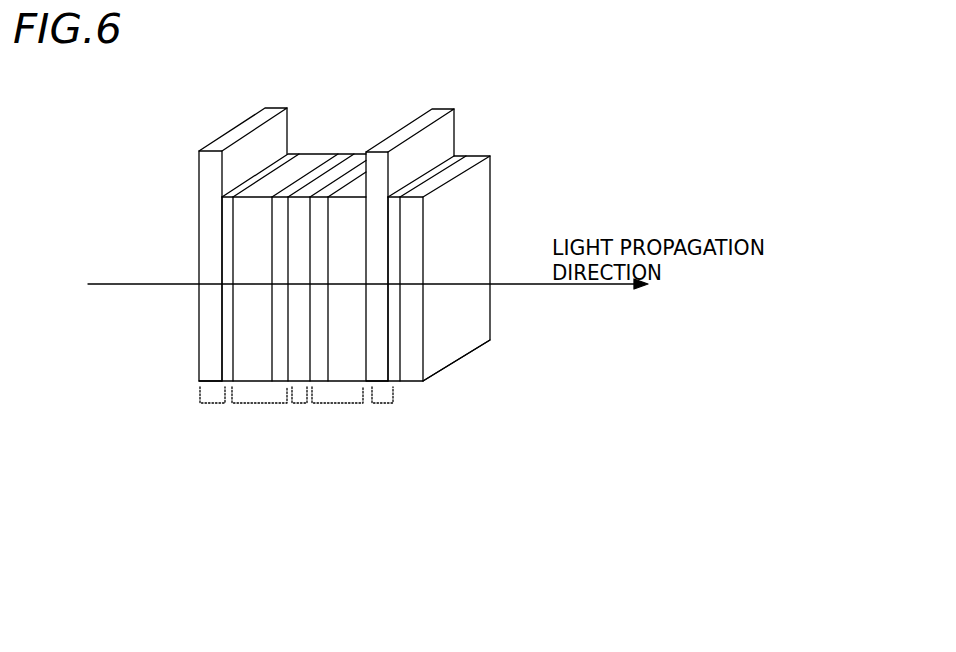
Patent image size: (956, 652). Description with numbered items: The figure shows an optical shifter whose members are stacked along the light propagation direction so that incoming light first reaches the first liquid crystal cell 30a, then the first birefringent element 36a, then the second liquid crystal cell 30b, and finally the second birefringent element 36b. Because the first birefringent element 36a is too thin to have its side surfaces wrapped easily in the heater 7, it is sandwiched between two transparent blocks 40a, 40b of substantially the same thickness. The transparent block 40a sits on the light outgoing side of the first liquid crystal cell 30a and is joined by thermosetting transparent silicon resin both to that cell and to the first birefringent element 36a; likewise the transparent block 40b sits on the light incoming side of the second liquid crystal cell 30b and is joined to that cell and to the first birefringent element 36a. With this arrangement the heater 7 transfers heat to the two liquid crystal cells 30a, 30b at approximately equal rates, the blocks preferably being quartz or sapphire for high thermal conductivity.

The heater 7 is at (342, 148).
The first liquid crystal cell 30a is at (212, 412).
The second liquid crystal cell 30b is at (385, 412).
The first birefringent element 36a is at (300, 412).
The second birefringent element 36b is at (482, 355).
The transparent block 40a is at (244, 412).
The transparent block 40b is at (338, 412).